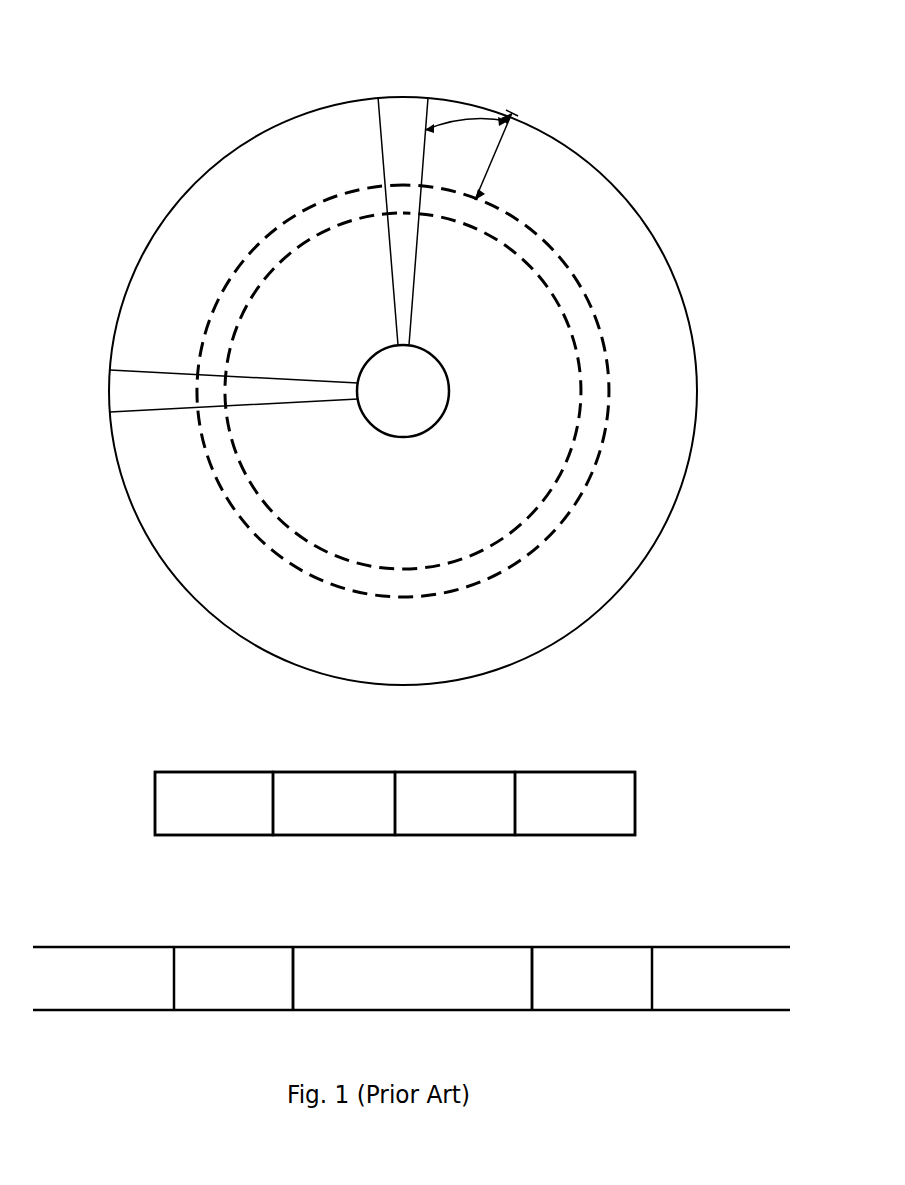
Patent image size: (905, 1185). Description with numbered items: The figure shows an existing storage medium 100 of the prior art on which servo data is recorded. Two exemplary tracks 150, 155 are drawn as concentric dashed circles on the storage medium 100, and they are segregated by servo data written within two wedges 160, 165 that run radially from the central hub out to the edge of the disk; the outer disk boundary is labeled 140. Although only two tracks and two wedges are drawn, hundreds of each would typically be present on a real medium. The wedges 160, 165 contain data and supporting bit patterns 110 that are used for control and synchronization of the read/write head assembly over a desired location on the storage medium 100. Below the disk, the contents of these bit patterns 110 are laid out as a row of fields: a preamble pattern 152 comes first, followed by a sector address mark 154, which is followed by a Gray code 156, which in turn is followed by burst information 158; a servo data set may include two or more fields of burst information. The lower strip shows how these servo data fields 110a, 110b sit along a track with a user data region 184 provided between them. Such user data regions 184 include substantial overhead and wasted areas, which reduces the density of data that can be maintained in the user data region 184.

The storage medium 100 is at (115, 58).
The bit patterns 110 is at (505, 742).
The servo data 110a is at (212, 1004).
The servo data 110b is at (571, 1004).
The magnetic disk 140 is at (603, 173).
The track 150 is at (535, 232).
The preamble pattern 152 is at (198, 827).
The sector address mark 154 is at (318, 827).
The track 155 is at (543, 283).
The Gray code 156 is at (439, 827).
The burst information 158 is at (559, 827).
The wedge 160 is at (403, 100).
The wedge 165 is at (117, 395).
The user data region 184 is at (396, 1004).